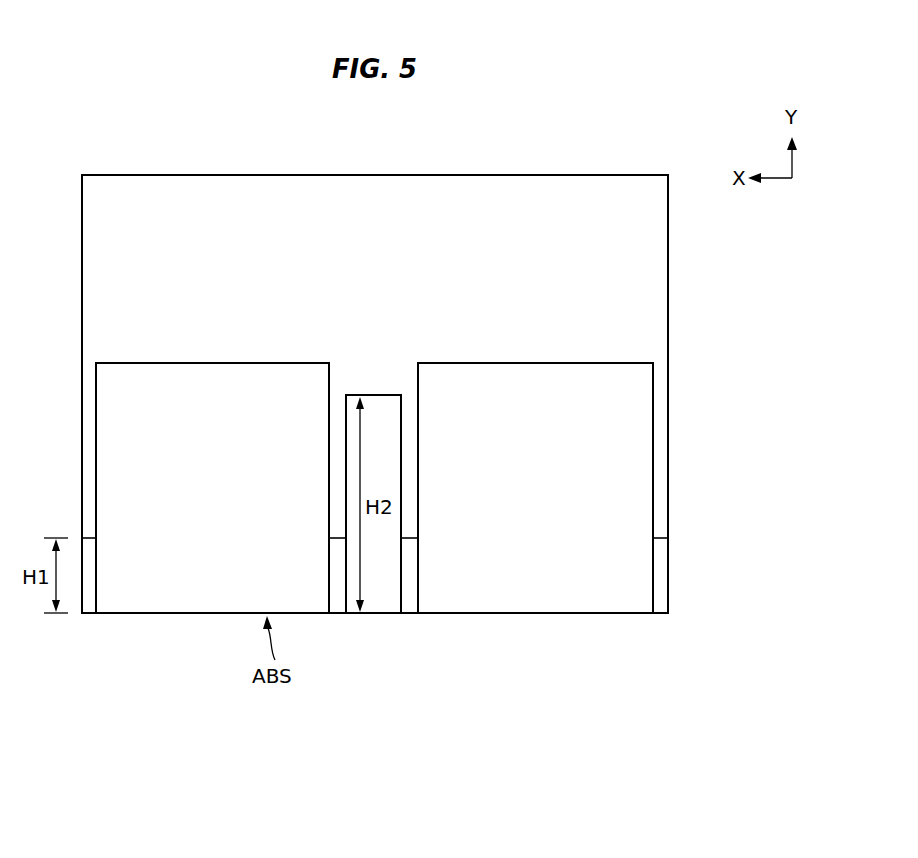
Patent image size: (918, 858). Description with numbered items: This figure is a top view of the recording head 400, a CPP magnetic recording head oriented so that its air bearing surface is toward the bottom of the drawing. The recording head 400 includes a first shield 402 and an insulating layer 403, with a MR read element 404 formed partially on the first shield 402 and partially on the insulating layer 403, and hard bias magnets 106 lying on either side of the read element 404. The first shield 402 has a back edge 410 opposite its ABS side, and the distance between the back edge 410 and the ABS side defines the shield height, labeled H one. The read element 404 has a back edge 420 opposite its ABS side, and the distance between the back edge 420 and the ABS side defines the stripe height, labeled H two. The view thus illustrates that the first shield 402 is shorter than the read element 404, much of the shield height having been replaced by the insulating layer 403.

The recording head 400 is at (378, 362).
The insulating layer 403 is at (500, 188).
The hard bias magnets 106 is at (231, 424).
The MR read element 404 is at (388, 607).
The back edge 420 is at (372, 384).
The back edge 410 is at (89, 524).
The first shield 402 is at (662, 576).